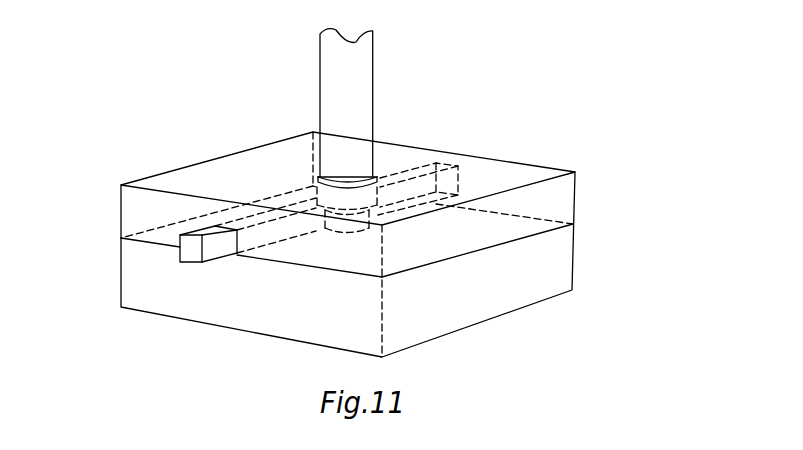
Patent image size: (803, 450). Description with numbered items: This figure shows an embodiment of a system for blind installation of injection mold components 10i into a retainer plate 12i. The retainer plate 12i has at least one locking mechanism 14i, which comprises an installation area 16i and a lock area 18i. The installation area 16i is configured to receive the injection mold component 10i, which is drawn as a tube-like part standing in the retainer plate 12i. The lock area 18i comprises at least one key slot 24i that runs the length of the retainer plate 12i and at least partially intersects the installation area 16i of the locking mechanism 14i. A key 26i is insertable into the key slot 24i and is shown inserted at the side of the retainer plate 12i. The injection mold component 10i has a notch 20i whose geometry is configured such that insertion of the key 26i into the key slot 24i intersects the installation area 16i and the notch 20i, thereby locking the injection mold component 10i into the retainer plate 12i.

The injection mold component 10i is at (362, 85).
The retainer plate 12i is at (557, 197).
The locking mechanism 14i is at (384, 178).
The installation area 16i is at (370, 212).
The lock area 18i is at (372, 231).
The notch 20i is at (327, 233).
The key slot 24i is at (226, 222).
The key 26i is at (192, 252).